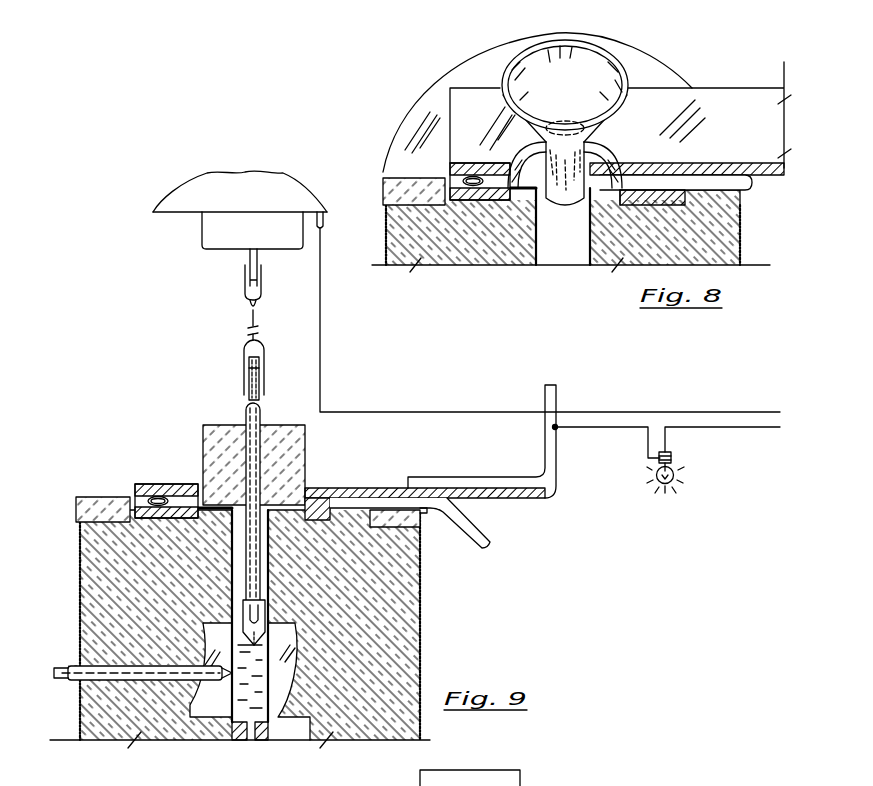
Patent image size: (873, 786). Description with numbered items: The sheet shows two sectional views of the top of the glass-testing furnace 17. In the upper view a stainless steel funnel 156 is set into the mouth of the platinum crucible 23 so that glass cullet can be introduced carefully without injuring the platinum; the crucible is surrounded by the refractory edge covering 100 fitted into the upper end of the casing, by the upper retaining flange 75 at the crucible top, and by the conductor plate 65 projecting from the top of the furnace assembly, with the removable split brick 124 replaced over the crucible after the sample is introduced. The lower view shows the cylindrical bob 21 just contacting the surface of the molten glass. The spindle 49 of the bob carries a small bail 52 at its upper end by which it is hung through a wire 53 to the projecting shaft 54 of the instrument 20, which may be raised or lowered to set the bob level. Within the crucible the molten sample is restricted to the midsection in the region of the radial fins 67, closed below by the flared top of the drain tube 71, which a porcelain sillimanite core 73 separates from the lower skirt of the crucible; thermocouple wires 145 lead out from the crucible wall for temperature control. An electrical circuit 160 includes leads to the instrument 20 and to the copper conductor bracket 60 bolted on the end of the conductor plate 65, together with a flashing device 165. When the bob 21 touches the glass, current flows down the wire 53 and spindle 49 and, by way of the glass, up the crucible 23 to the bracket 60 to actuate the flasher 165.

In FIG. 8, the furnace 17 is at (735, 220).
In FIG. 9, the furnace 17 is at (424, 620).
In FIG. 9, the instrument 20 is at (202, 229).
In FIG. 9, the cylindrical bob 21 is at (262, 620).
In FIG. 8, the platinum crucible 23 is at (560, 264).
In FIG. 9, the platinum crucible 23 is at (268, 592).
In FIG. 9, the spindle 49 is at (248, 403).
In FIG. 9, the bail 52 is at (246, 343).
In FIG. 9, the wire 53 is at (250, 306).
In FIG. 9, the projecting shaft 54 is at (246, 262).
In FIG. 9, the conductor bracket 60 is at (557, 481).
In FIG. 8, the conductor plate 65 is at (713, 88).
In FIG. 9, the conductor plate 65 is at (538, 498).
In FIG. 9, the radial fins 67 is at (292, 720).
In FIG. 9, the drain tube 71 is at (252, 738).
In FIG. 9, the porcelain sillimanite core 73 is at (240, 742).
In FIG. 8, the retaining flange 75 is at (503, 163).
In FIG. 9, the retaining flange 75 is at (214, 505).
In FIG. 8, the refractory edge covering 100 is at (392, 153).
In FIG. 9, the refractory edge covering 100 is at (107, 497).
In FIG. 9, the removable split brick 124 is at (205, 425).
In FIG. 9, the thermocouple wires 145 is at (55, 676).
In FIG. 8, the stainless steel funnel 156 is at (624, 58).
In FIG. 9, the electrical circuit 160 is at (322, 382).
In FIG. 9, the flashing device 165 is at (670, 468).